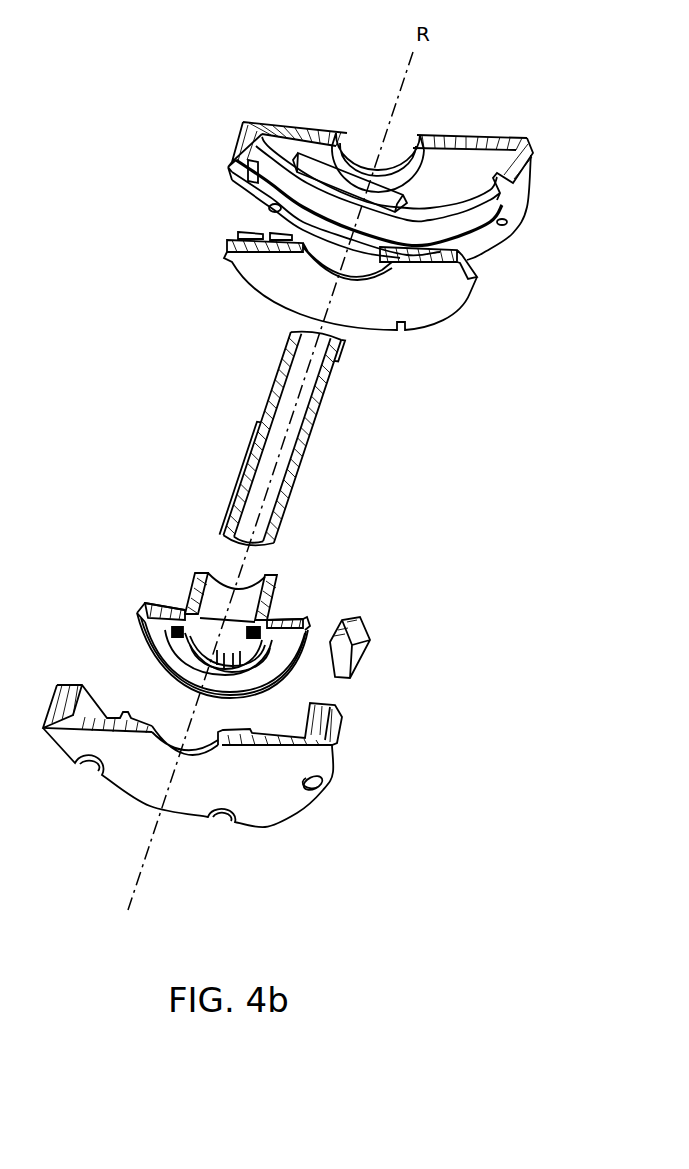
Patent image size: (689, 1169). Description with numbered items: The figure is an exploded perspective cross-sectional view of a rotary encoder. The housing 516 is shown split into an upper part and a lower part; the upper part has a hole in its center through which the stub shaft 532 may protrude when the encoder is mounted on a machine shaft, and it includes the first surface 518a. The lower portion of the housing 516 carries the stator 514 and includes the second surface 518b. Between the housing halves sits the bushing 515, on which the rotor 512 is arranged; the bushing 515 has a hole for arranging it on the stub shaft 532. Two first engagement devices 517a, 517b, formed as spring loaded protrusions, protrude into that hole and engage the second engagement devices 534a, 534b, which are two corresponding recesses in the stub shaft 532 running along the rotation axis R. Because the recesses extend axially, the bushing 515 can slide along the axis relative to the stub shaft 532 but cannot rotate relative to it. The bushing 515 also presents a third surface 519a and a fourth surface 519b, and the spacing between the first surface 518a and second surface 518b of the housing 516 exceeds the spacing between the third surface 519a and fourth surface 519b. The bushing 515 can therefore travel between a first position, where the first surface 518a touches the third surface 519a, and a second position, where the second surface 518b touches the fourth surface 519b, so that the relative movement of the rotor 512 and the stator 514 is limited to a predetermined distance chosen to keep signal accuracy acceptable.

The rotor 512 is at (319, 621).
The stator 514 is at (368, 646).
The bushing 515 is at (190, 580).
The housing 516 is at (300, 118).
The first engagement device 517a is at (178, 627).
The first engagement device 517b is at (258, 634).
The first surface 518a is at (426, 159).
The second surface 518b is at (232, 728).
The third surface 519a is at (279, 578).
The fourth surface 519b is at (176, 651).
The stub shaft 532 is at (332, 402).
The second engagement device 534a is at (239, 488).
The second engagement device 534b is at (300, 488).